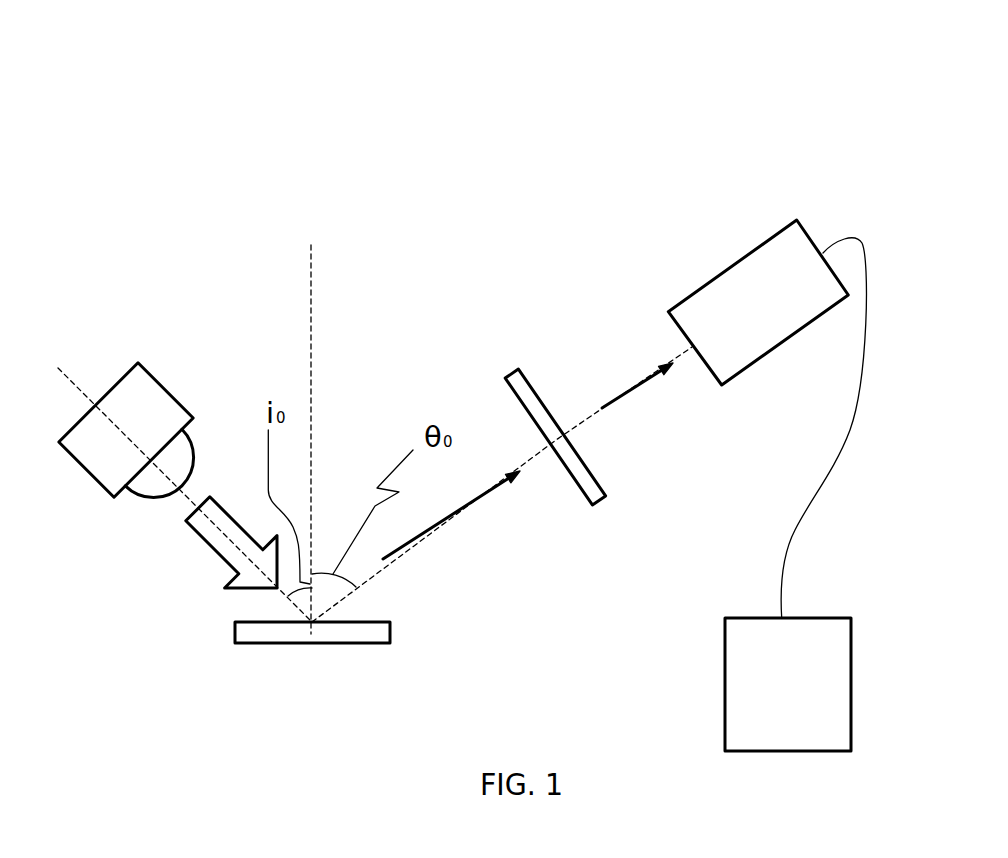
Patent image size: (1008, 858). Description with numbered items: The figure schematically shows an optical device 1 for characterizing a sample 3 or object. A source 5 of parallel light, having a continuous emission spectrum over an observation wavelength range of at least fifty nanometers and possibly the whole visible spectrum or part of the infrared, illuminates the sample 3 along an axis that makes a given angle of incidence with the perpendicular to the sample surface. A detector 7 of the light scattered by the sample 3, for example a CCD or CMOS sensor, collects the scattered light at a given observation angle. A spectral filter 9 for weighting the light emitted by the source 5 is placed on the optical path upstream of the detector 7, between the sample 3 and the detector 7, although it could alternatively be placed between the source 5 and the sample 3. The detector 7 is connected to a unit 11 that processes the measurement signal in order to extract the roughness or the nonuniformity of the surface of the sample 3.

The optical device 1 is at (328, 150).
The sample 3 is at (235, 644).
The source of parallel light 5 is at (140, 362).
The detector 7 is at (738, 259).
The spectral filter 9 is at (608, 497).
The processing unit 11 is at (725, 678).